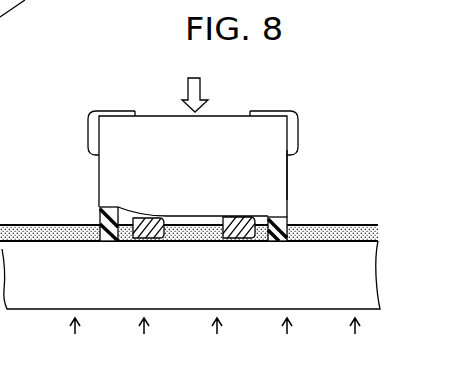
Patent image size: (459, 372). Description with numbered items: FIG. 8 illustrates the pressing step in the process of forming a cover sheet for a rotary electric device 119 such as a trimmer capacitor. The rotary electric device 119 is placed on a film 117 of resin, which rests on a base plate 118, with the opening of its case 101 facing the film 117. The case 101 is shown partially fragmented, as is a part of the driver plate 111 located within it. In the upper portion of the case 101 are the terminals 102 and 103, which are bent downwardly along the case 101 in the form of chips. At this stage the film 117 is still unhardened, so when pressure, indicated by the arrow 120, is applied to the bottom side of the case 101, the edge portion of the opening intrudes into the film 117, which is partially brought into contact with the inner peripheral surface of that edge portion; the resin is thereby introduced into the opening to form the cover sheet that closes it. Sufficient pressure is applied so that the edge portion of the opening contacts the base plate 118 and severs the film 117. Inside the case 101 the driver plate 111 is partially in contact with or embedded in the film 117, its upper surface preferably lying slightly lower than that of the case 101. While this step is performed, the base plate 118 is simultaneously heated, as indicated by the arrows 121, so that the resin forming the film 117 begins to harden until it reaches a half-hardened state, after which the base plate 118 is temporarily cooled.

The case 101 is at (112, 176).
The terminal 102 is at (296, 113).
The terminal 103 is at (97, 110).
The driver plate 111 is at (232, 213).
The film 117 is at (357, 227).
The base plate 118 is at (365, 276).
The rotary electric device 119 is at (300, 176).
The arrow indicating pressure 120 is at (197, 93).
The arrows indicating heating 121 is at (217, 333).